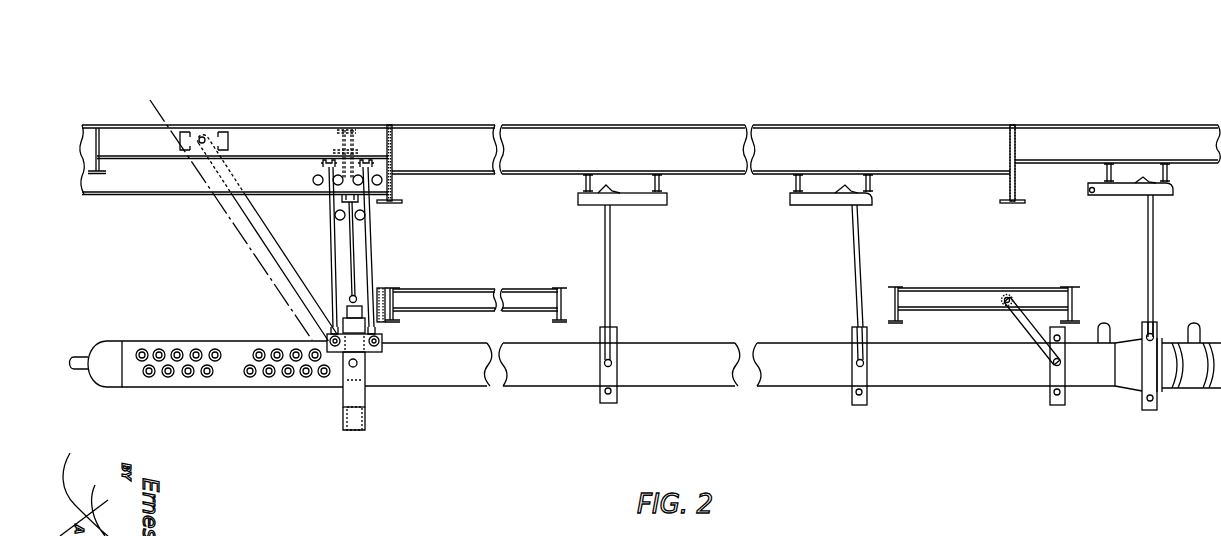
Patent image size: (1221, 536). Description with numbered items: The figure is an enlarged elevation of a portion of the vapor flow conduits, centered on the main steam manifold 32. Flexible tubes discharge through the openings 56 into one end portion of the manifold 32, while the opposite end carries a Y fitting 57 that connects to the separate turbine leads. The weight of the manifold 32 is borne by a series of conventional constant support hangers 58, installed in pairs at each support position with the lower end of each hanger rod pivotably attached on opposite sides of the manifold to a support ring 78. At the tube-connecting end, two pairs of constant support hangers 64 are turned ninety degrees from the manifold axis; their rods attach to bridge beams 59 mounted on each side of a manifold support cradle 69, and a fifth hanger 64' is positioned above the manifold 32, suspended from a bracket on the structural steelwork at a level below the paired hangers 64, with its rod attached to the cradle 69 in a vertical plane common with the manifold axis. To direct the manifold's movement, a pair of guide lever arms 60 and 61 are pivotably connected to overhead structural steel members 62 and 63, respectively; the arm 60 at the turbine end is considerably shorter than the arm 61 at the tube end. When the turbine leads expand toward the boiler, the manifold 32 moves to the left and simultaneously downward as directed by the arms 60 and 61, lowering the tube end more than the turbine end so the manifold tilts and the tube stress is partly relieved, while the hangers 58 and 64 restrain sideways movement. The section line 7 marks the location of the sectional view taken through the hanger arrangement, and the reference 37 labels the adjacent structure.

The section line 7- 7 is at (142, 88).
The main steam manifold 32 is at (235, 385).
The support post 37 is at (395, 140).
The openings 56 is at (259, 350).
The Y fitting 57 is at (1170, 388).
The constant support hangers 58 is at (644, 203).
The bridge beams 59 is at (385, 346).
The guide lever arm 60 is at (1020, 315).
The guide lever arm 61 is at (260, 222).
The overhead structural steel member 62 is at (952, 295).
The overhead structural steel member 63 is at (225, 210).
The constant support hangers 64 is at (354, 182).
The fifth hanger 64' is at (376, 267).
The manifold support cradle 69 is at (368, 395).
The support ring 78 is at (618, 398).